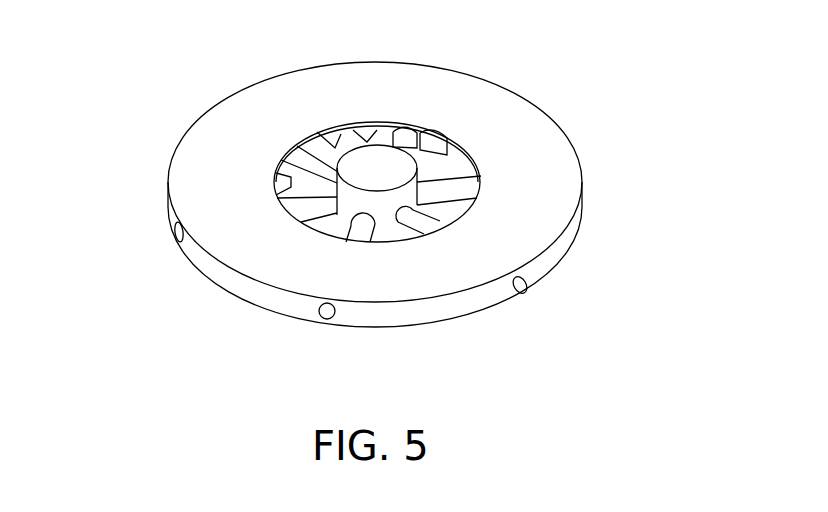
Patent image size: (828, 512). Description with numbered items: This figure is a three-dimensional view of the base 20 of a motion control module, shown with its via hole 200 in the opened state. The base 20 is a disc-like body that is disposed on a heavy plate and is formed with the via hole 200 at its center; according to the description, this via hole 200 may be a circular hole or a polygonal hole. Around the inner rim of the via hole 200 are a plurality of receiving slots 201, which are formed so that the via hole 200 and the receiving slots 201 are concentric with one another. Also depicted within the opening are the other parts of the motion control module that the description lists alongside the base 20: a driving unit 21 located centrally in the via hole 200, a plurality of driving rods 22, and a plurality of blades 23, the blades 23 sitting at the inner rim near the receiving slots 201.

The base 20 is at (540, 192).
The via hole 200 is at (443, 168).
The driving unit 21 is at (363, 168).
The driving rods 22 is at (363, 232).
The blades 23 is at (437, 140).
The receiving slots 201 is at (337, 140).